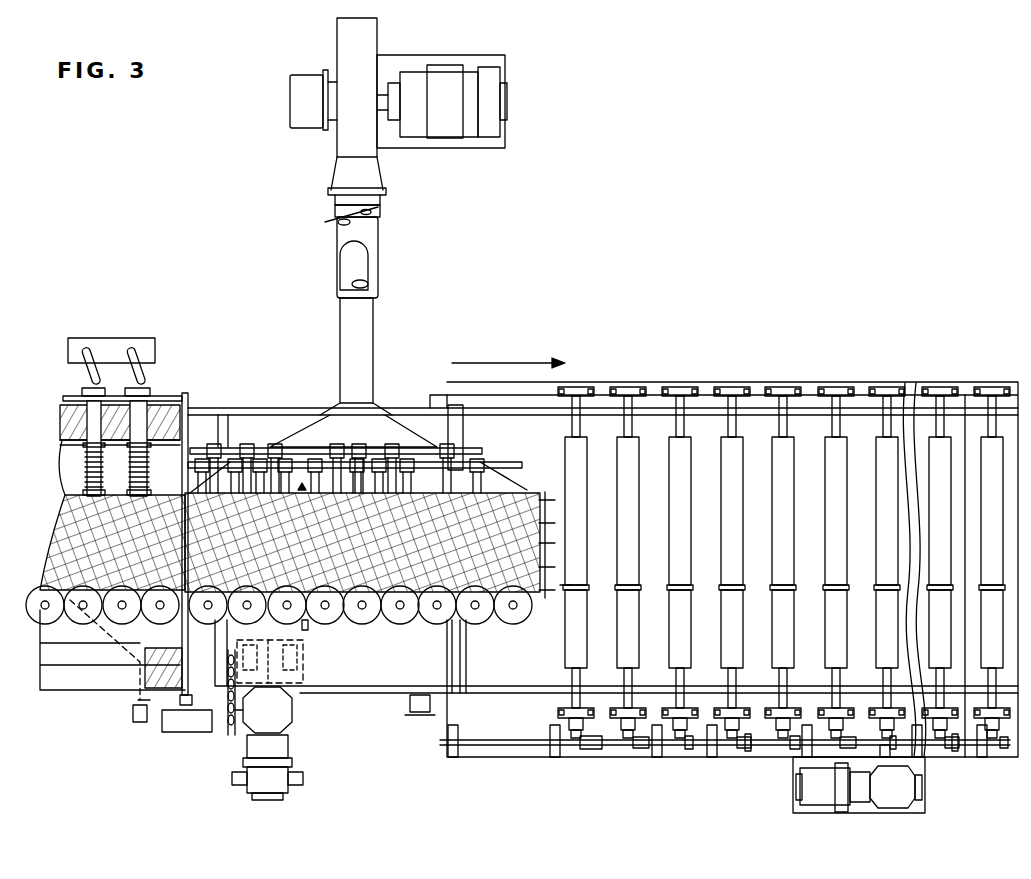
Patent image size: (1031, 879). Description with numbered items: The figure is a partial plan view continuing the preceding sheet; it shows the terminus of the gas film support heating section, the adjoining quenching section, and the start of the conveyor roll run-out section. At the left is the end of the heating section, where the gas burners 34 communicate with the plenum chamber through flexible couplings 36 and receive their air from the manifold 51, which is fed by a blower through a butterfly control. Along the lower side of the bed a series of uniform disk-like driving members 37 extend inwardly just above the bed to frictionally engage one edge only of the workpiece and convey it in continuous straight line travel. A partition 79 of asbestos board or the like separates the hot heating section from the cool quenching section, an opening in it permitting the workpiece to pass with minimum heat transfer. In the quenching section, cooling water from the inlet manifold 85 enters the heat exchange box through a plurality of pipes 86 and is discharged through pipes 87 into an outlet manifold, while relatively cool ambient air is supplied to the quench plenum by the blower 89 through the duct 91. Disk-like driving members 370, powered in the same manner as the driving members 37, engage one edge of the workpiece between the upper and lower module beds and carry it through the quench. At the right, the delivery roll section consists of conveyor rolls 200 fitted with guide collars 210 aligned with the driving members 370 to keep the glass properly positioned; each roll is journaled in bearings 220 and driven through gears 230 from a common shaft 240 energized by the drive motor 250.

The gas burners 34 is at (95, 420).
The flexible couplings 36 is at (133, 480).
The disk-like driving members 37 is at (150, 622).
The manifold 51 is at (148, 338).
The partition 79 is at (178, 668).
The inlet manifold 85 is at (510, 463).
The pipes 86 is at (412, 480).
The pipes 87 is at (478, 450).
The blower 89 is at (337, 40).
The duct 91 is at (338, 230).
The conveyor rolls 200 is at (882, 470).
The guide collars 210 is at (928, 593).
The bearings 220 is at (672, 388).
The gears 230 is at (680, 745).
The common shaft 240 is at (523, 746).
The drive motor 250 is at (812, 790).
The disk-like driving members 370 is at (350, 618).